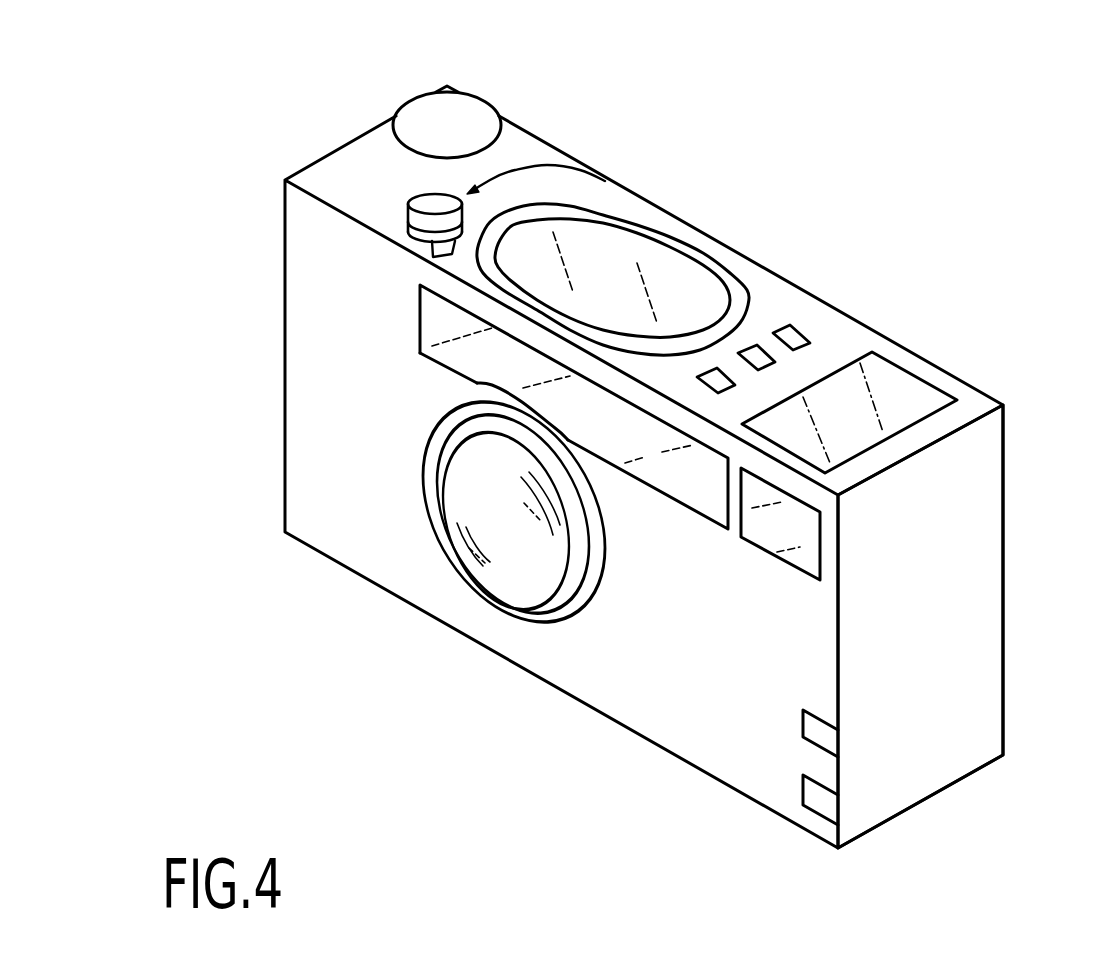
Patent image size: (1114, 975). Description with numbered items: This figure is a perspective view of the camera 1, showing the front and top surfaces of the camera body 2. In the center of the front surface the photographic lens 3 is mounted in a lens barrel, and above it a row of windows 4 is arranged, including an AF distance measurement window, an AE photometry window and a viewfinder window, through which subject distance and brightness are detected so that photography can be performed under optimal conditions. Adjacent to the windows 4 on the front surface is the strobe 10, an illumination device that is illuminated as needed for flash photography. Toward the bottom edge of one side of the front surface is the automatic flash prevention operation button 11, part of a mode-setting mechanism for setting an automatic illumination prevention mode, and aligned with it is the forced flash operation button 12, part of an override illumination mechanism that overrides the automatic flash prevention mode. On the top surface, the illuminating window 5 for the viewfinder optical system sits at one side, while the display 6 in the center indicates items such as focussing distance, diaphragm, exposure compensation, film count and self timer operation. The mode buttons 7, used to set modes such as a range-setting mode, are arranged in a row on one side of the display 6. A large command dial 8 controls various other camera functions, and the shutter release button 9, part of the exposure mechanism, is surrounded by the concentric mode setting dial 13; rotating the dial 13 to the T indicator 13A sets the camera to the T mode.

The camera 1 is at (674, 435).
The camera body 2 is at (983, 608).
The photographic lens 3 is at (505, 572).
The windows 4 is at (695, 498).
The illuminating window 5 is at (895, 380).
The display 6 is at (650, 252).
The mode buttons 7 is at (712, 373).
The command dial 8 is at (453, 117).
The shutter release button 9 is at (423, 215).
The strobe 10 is at (808, 550).
The automatic flash prevention operation button 11 is at (822, 798).
The forced flash operation button 12 is at (828, 733).
The mode setting dial 13 is at (443, 245).
The T indicator 13A is at (600, 182).